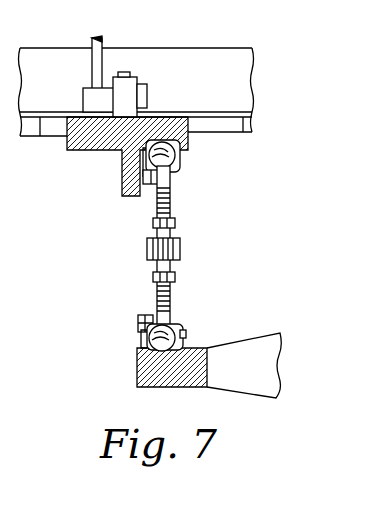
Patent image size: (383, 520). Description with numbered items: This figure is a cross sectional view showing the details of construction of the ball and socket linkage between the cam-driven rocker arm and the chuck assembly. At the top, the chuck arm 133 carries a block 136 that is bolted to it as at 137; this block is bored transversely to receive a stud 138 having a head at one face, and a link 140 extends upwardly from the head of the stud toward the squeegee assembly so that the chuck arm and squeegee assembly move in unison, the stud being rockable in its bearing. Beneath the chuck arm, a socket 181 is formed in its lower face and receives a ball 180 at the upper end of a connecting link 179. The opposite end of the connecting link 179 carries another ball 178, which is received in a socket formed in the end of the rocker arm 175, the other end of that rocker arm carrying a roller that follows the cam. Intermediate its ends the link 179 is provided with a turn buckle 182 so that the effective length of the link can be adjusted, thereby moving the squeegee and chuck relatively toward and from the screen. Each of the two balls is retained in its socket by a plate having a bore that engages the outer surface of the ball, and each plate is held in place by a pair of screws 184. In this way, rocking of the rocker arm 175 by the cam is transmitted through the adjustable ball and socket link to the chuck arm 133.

The chuck arm 133 is at (97, 142).
The block 136 is at (142, 88).
The bolt 137 is at (128, 73).
The stud 138 is at (92, 100).
The link 140 is at (95, 58).
The rocker arm 175 is at (270, 369).
The ball 178 is at (185, 340).
The connecting link 179 is at (175, 292).
The ball 180 is at (176, 158).
The socket 181 is at (180, 139).
The turn buckle 182 is at (182, 246).
The screws 184 is at (172, 190).